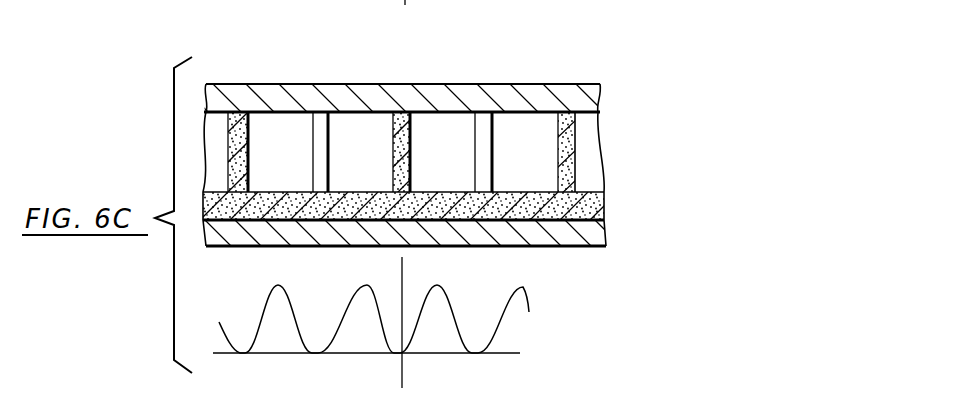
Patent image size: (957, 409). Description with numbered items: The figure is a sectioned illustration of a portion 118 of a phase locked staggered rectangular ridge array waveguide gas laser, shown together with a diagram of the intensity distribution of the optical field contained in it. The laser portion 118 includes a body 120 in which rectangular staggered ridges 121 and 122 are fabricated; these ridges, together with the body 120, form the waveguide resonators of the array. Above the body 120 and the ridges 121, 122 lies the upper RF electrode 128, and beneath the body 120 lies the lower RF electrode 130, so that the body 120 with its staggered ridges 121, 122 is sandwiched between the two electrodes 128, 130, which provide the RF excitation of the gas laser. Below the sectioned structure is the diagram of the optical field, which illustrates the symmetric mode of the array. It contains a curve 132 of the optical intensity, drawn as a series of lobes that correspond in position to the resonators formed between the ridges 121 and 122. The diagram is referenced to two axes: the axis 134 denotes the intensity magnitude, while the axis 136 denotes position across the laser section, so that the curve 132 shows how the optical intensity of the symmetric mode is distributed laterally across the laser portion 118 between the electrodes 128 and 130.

The portion of phase locked staggered rectangular ridge array waveguide gas laser 118 is at (613, 98).
The body 120 is at (605, 200).
The rectangular staggered ridge 121 is at (314, 129).
The rectangular staggered ridge 122 is at (240, 163).
The upper RF electrode 128 is at (467, 84).
The lower RF electrode 130 is at (528, 247).
The curve of optical intensity 132 is at (358, 300).
The intensity magnitude axis 134 is at (401, 272).
The position axis 136 is at (507, 352).